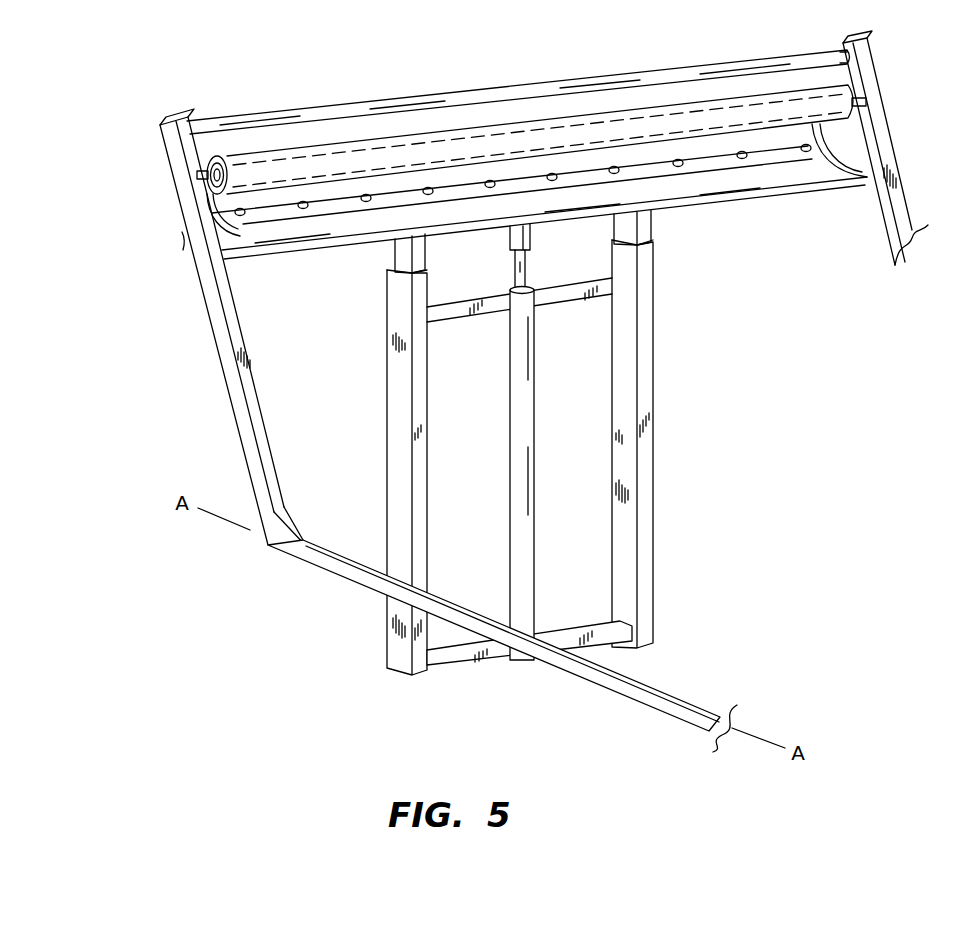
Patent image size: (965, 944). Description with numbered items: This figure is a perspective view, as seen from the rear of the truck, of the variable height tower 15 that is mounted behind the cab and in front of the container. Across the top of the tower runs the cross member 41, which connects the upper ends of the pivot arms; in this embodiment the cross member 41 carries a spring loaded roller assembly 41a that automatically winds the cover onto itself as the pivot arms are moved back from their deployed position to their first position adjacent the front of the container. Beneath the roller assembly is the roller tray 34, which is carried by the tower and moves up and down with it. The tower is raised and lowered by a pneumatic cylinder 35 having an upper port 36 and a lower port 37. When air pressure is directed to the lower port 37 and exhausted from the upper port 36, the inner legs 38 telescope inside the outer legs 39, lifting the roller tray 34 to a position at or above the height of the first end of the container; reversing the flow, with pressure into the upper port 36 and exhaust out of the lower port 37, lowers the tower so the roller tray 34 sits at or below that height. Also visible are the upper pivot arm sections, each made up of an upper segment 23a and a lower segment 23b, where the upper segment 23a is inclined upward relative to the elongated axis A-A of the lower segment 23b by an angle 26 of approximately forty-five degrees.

The variable height tower 15 is at (539, 442).
The upper segment 23a is at (223, 345).
The lower segment 23b is at (362, 590).
The angle 26 is at (538, 391).
The roller tray 34 is at (788, 190).
The pneumatic cylinder 35 is at (525, 398).
The upper port 36 is at (533, 298).
The lower port 37 is at (540, 628).
The inner legs 38 is at (395, 252).
The outer legs 39 is at (397, 388).
The cross member 41 is at (673, 67).
The spring loaded roller assembly 41a is at (673, 123).